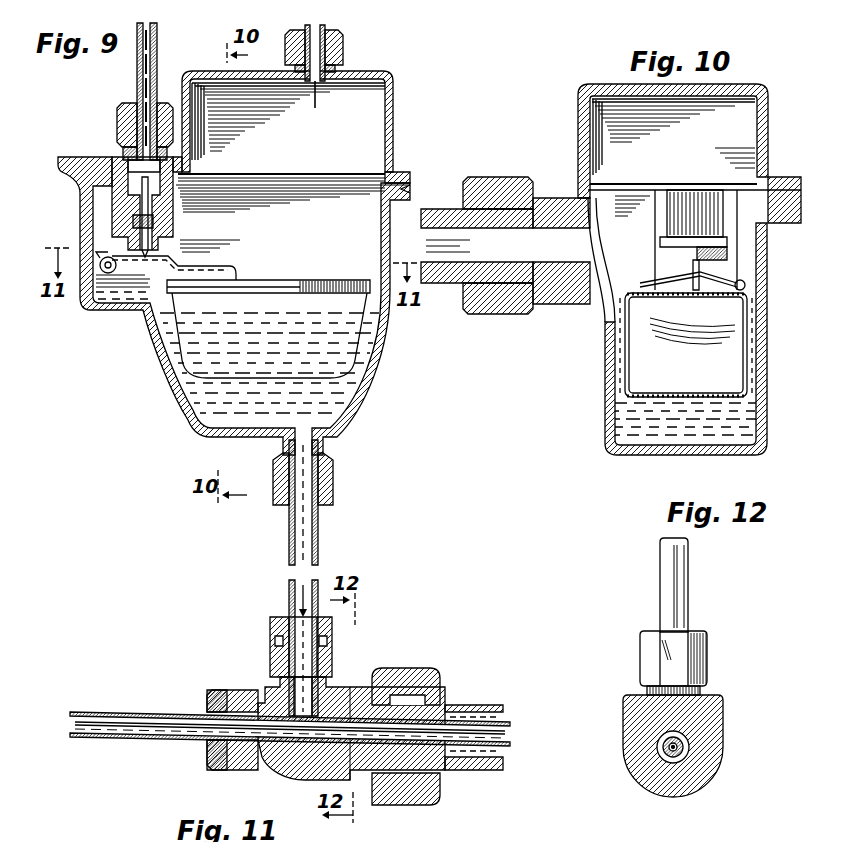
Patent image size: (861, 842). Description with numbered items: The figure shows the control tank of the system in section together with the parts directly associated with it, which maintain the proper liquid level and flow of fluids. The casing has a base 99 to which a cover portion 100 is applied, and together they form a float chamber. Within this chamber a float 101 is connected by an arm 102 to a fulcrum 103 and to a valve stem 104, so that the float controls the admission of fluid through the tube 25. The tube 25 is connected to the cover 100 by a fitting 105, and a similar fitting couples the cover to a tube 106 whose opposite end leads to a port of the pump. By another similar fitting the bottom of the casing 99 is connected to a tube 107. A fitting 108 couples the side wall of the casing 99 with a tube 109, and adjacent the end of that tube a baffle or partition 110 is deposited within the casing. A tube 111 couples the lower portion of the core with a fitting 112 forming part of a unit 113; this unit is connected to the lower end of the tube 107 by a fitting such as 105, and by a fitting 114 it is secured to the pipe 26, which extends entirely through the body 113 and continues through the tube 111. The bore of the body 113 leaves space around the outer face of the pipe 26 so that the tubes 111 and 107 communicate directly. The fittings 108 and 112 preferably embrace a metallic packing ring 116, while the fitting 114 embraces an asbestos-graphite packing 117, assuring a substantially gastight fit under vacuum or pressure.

In FIG. 9, the tube 25 is at (138, 57).
In FIG. 12, the pipe 26 is at (682, 760).
In FIG. 11, the pipe 26 is at (107, 712).
In FIG. 9, the base of casing 99 is at (150, 356).
In FIG. 10, the base of casing 99 is at (763, 342).
In FIG. 9, the cover portion 100 is at (393, 103).
In FIG. 10, the cover portion 100 is at (761, 117).
In FIG. 9, the float 101 is at (247, 283).
In FIG. 10, the float 101 is at (728, 320).
In FIG. 9, the arm 102 is at (172, 257).
In FIG. 10, the arm 102 is at (718, 275).
In FIG. 9, the fulcrum 103 is at (84, 250).
In FIG. 10, the fulcrum 103 is at (745, 287).
In FIG. 9, the valve stem 104 is at (170, 187).
In FIG. 10, the valve stem 104 is at (712, 268).
In FIG. 9, the fitting 105 is at (117, 113).
In FIG. 12, the fitting 105 is at (707, 652).
In FIG. 11, the fitting 105 is at (270, 625).
In FIG. 9, the tube 106 is at (327, 27).
In FIG. 9, the tube 107 is at (319, 535).
In FIG. 12, the tube 107 is at (679, 570).
In FIG. 10, the fitting 108 is at (485, 177).
In FIG. 10, the tube 109 is at (443, 284).
In FIG. 10, the baffle or partition 110 is at (608, 291).
In FIG. 11, the tube 111 is at (500, 770).
In FIG. 11, the fitting 112 is at (437, 678).
In FIG. 12, the unit or body 113 is at (723, 747).
In FIG. 11, the unit or body 113 is at (306, 777).
In FIG. 11, the fitting 114 is at (207, 760).
In FIG. 10, the metallic packing ring 116 is at (487, 315).
In FIG. 11, the metallic packing ring 116 is at (440, 790).
In FIG. 11, the asbestos-graphite packing 117 is at (207, 700).